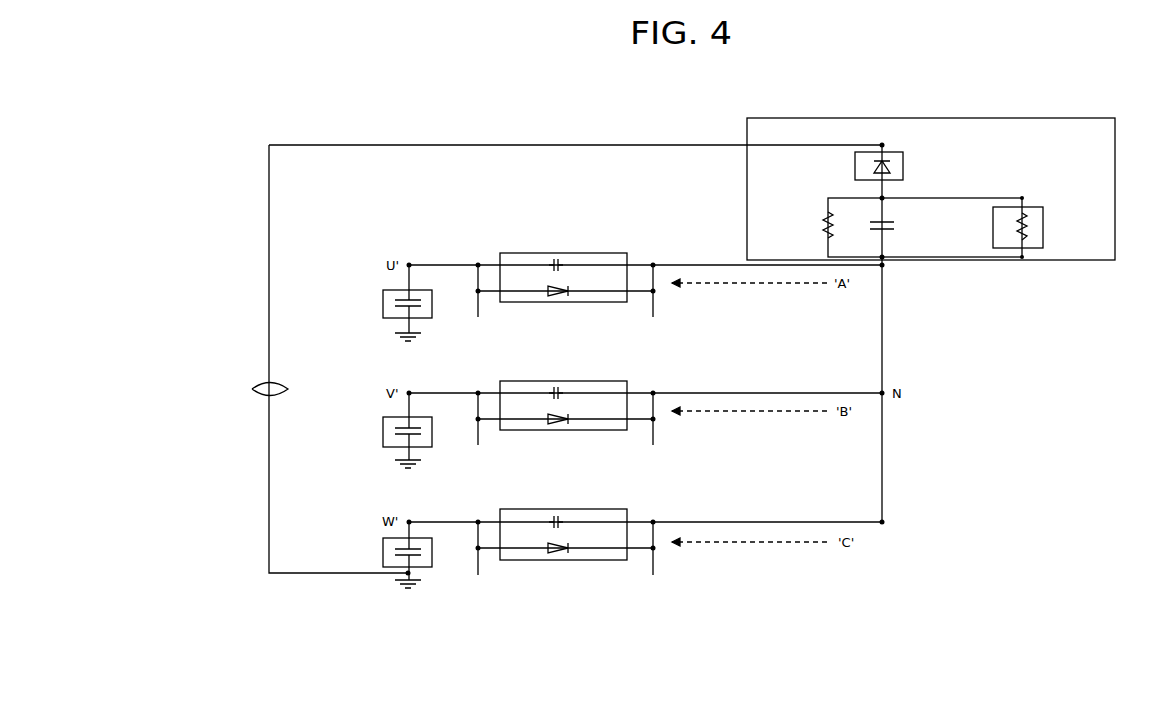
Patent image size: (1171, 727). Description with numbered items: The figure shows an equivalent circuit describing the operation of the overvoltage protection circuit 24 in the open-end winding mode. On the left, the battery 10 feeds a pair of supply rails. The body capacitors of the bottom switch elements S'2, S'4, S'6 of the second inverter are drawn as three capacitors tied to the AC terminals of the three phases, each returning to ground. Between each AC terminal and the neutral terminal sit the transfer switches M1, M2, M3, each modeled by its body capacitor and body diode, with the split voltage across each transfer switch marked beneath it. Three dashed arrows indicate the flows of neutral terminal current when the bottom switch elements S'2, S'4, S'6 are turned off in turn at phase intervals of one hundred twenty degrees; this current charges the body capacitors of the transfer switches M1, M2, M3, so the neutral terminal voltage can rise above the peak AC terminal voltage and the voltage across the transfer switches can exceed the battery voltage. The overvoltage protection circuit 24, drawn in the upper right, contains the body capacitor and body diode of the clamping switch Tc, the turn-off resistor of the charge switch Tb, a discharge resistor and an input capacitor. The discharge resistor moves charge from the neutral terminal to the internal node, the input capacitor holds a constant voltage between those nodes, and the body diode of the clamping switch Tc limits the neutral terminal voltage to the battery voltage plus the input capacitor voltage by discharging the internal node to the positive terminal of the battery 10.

The battery 10 is at (252, 389).
The overvoltage protection circuit 24 is at (955, 172).
The transfer switch M1 is at (618, 253).
The transfer switch M2 is at (618, 381).
The transfer switch M3 is at (618, 509).
The bottom switch element S'2 is at (370, 303).
The bottom switch element S'4 is at (370, 430).
The bottom switch element S'6 is at (370, 552).
The clamping switch Tc is at (906, 160).
The charge switch Tb is at (1045, 215).